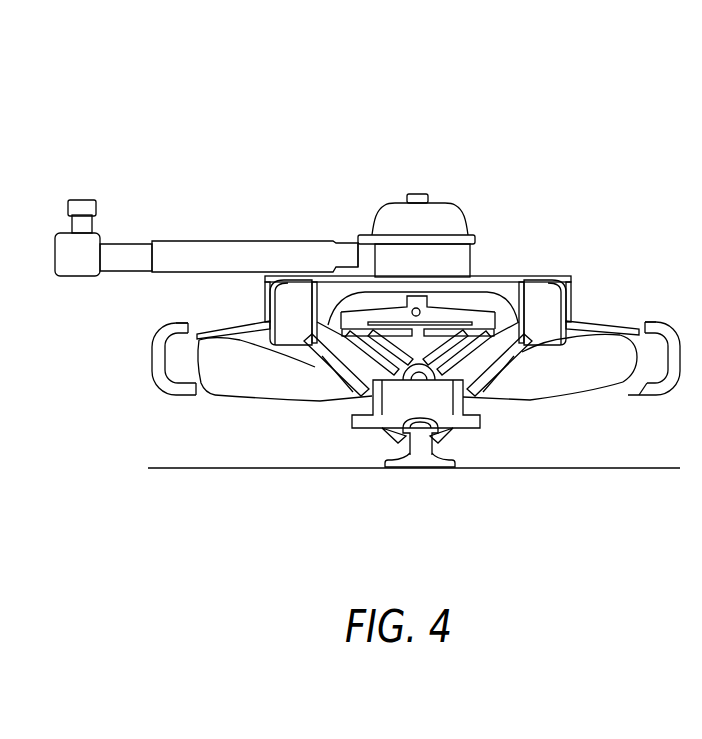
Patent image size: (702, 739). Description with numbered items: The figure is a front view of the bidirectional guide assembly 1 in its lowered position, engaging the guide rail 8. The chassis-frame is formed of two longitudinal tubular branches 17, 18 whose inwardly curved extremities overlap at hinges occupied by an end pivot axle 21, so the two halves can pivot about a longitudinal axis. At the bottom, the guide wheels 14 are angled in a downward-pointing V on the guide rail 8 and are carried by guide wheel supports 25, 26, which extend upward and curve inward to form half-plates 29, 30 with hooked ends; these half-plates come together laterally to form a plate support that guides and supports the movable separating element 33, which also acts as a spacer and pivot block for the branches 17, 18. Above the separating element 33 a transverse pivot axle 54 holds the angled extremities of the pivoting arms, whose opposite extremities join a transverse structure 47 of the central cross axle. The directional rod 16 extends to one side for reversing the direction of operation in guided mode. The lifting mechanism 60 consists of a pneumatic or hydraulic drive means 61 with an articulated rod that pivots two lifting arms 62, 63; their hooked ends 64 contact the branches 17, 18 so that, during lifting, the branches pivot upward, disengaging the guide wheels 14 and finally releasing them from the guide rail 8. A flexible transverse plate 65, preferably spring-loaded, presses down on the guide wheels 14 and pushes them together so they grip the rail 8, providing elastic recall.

The bidirectional guide assembly 1 is at (632, 128).
The guide rail 8 is at (413, 455).
The guide wheel 14 is at (320, 362).
The directional rod 16 is at (220, 246).
The branch 17 is at (252, 377).
The branch 18 is at (562, 385).
The end pivot axle 21 is at (409, 366).
The guide wheel support 25 is at (323, 424).
The guide wheel support 26 is at (484, 372).
The half-plate 29 is at (357, 322).
The half-plate 30 is at (477, 324).
The movable separating element 33 is at (435, 312).
The transverse structure 47 is at (385, 280).
The transverse pivot axle 54 is at (573, 292).
The lifting mechanism 60 is at (557, 180).
The drive means 61 is at (420, 186).
The lifting arm 62 is at (190, 390).
The lifting arm 63 is at (618, 388).
The hooked end 64 is at (174, 318).
The flexible transverse plate 65 is at (595, 325).